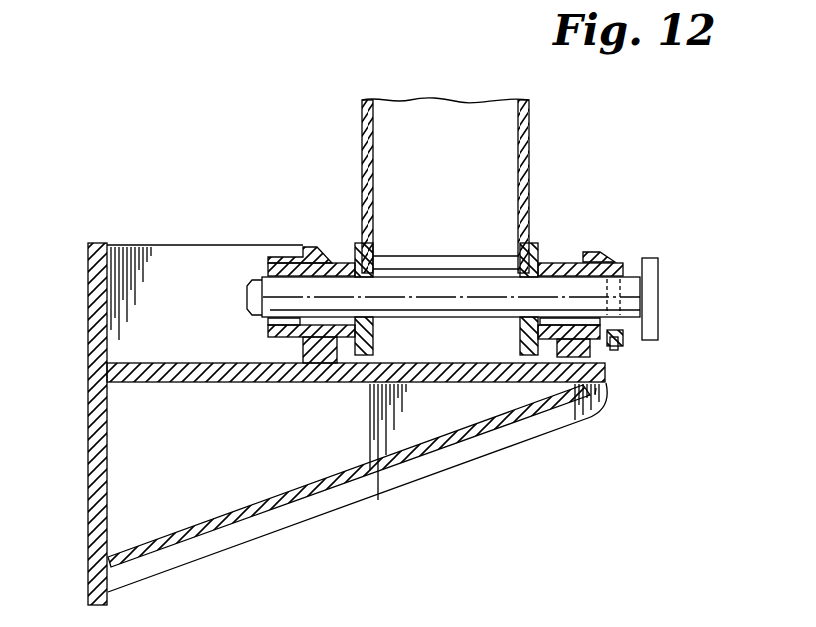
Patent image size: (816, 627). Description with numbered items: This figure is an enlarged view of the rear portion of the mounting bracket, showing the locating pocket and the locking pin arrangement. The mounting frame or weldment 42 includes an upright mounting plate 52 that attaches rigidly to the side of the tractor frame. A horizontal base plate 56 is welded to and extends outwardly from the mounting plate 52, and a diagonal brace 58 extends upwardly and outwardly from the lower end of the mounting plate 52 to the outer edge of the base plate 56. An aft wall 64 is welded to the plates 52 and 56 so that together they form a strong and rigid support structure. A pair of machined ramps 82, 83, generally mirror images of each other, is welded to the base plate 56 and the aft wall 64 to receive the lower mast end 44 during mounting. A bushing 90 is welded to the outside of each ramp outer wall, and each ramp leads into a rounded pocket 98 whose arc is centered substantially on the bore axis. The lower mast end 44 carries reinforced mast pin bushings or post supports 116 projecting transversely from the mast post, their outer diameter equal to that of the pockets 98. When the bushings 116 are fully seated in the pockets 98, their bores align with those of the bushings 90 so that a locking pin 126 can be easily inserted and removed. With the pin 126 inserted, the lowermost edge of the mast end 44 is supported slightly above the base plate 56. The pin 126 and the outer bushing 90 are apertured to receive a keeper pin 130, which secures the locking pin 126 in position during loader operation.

The mounting frame or weldment 42 is at (622, 427).
The lower mast end 44 is at (548, 186).
The upright mounting plate 52 is at (88, 316).
The horizontal base plate 56 is at (160, 384).
The diagonal brace 58 is at (463, 443).
The aft wall 64 is at (151, 247).
The machined ramp 82 is at (310, 250).
The machined ramp 83 is at (582, 260).
The bushing 90 is at (267, 330).
The rounded pocket 98 is at (300, 384).
The mast pin bushing or post support 116 is at (337, 264).
The locking pin 126 is at (437, 274).
The keeper pin 130 is at (620, 342).